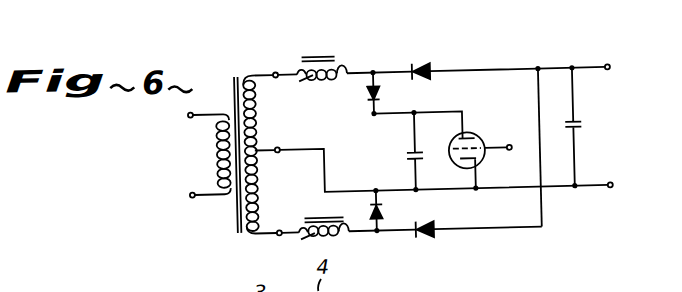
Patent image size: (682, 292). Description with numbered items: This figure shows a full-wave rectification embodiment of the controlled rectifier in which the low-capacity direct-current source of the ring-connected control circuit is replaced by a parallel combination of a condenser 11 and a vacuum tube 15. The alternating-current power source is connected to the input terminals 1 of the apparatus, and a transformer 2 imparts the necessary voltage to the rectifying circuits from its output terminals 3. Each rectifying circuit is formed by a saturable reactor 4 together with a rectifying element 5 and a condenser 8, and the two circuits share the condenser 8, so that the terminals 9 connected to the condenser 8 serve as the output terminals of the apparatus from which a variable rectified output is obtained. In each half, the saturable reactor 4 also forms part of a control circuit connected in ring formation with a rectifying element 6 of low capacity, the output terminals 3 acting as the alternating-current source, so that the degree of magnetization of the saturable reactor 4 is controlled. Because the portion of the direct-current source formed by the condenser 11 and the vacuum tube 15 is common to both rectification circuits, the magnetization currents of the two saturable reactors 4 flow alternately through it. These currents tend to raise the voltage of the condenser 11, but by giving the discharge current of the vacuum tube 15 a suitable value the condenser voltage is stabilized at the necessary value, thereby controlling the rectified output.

The input terminals 1 is at (187, 113).
The transformer 2 is at (231, 81).
The output terminals of transformer 3 is at (274, 69).
The saturable reactor 4 is at (300, 86).
The rectifying element 5 is at (419, 66).
The rectifying element of low capacity 6 is at (362, 95).
The condenser 8 is at (582, 133).
The output terminals 9 is at (613, 74).
The condenser 11 is at (417, 153).
The vacuum tube 15 is at (479, 135).